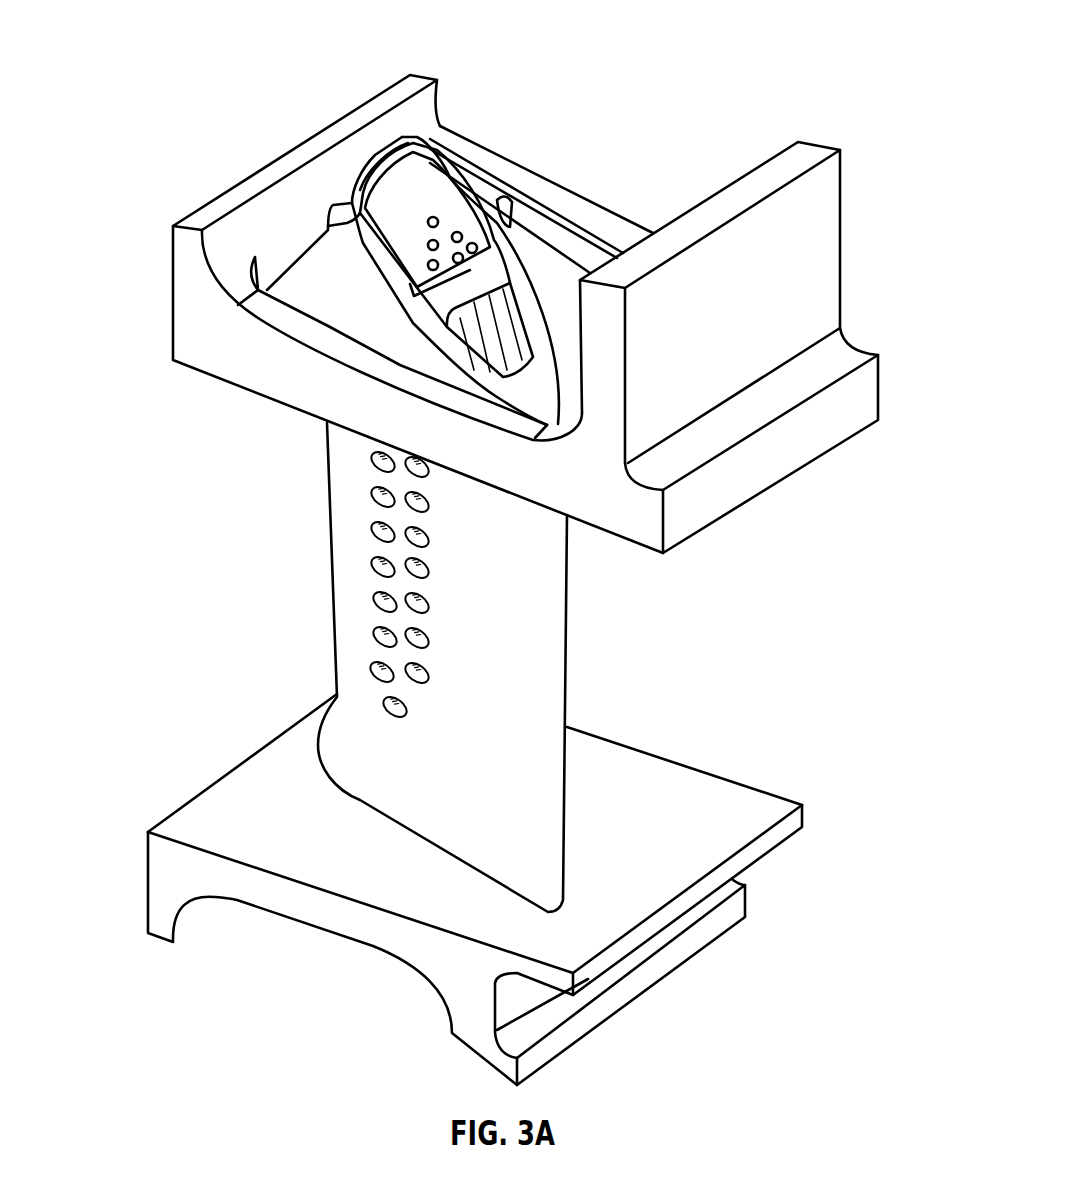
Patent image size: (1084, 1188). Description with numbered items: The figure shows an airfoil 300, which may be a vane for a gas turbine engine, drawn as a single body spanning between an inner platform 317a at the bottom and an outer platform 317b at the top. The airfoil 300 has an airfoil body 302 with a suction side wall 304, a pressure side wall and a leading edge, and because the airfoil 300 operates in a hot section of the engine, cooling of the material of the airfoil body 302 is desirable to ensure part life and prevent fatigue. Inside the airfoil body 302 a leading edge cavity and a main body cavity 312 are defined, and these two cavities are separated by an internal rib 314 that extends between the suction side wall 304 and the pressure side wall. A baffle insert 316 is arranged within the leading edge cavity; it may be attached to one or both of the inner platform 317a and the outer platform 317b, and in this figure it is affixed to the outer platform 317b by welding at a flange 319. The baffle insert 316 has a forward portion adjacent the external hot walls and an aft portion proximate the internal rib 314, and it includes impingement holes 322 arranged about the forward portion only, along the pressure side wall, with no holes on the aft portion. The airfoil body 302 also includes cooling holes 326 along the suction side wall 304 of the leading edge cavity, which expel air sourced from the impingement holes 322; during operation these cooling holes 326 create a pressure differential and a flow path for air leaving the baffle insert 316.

The airfoil 300 is at (504, 548).
The airfoil body 302 is at (448, 667).
The suction side wall 304 is at (420, 770).
The main body cavity 312 is at (520, 252).
The internal rib 314 is at (494, 328).
The baffle insert 316 is at (433, 180).
The inner platform 317a is at (158, 860).
The outer platform 317b is at (860, 397).
The flange 319 is at (500, 262).
The impingement holes 322 is at (425, 241).
The cooling holes 326 is at (358, 571).